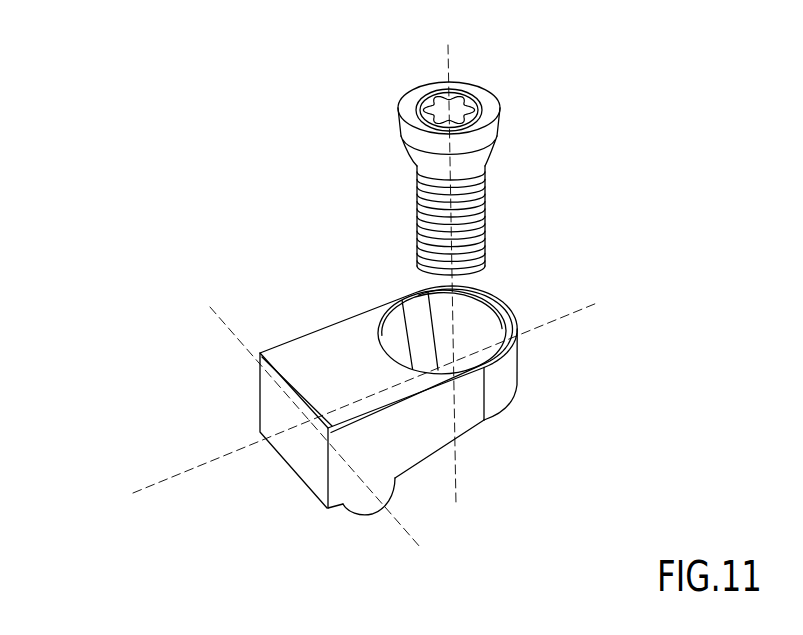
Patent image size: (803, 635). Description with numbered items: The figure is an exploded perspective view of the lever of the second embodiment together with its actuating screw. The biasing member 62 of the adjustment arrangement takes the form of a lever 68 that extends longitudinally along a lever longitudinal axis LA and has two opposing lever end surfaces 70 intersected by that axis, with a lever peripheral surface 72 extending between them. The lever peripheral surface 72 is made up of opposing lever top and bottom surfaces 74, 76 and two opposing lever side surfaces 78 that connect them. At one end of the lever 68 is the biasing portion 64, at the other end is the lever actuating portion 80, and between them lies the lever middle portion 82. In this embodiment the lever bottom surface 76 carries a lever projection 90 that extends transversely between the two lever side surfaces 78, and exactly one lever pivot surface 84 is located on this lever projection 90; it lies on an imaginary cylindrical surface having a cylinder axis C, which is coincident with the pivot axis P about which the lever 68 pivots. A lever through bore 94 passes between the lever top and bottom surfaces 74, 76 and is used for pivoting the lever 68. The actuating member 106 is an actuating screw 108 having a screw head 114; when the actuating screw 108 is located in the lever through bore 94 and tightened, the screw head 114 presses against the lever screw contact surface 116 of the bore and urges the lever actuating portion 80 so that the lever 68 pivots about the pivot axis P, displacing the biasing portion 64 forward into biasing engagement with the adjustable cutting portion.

The biasing member 62 is at (356, 403).
The lever 68 is at (356, 403).
The biasing portion 64 is at (274, 394).
The lever end surfaces 70 is at (297, 453).
The lever peripheral surface 72 is at (299, 303).
The lever top surface 74 is at (365, 330).
The lever bottom surface 76 is at (476, 459).
The lever side surfaces 78 is at (417, 443).
The lever actuating portion 80 is at (485, 308).
The lever middle portion 82 is at (437, 419).
The lever pivot surface 84 is at (405, 553).
The lever projection 90 is at (367, 513).
The lever through bore 94 is at (487, 333).
The actuating member 106 is at (482, 168).
The actuating screw 108 is at (482, 168).
The screw head 114 is at (423, 163).
The lever screw contact surface 116 is at (443, 317).
The cylinder axis C is at (301, 414).
The pivot axis P is at (301, 414).
The lever longitudinal axis LA is at (380, 390).